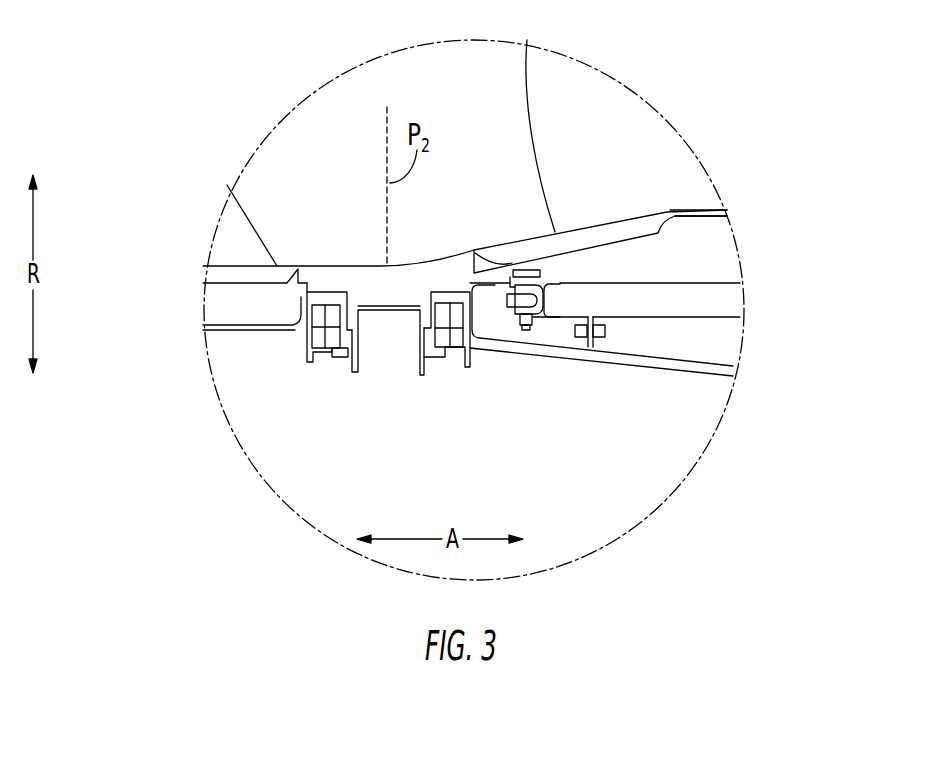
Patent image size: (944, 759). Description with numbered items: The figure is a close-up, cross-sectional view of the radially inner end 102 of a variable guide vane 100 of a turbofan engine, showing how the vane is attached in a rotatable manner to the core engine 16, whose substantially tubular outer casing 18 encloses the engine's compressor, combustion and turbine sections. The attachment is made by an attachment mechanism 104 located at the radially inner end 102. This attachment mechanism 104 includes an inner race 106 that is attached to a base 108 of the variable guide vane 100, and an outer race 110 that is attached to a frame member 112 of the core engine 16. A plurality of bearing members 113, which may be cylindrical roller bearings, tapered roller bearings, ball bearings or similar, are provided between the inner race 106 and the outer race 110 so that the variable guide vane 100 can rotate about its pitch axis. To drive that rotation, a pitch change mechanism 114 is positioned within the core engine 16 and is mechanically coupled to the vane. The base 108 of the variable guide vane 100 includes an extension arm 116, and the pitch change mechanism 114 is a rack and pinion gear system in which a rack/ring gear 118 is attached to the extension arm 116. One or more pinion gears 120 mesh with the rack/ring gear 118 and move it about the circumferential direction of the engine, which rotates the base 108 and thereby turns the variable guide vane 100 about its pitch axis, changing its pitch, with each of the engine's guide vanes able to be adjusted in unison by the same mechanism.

The core engine 16 is at (688, 200).
The outer casing 18 is at (710, 210).
The variable guide vane 100 is at (262, 168).
The radially inner end 102 is at (477, 224).
The attachment mechanism 104 is at (458, 378).
The inner race 106 is at (345, 350).
The base 108 is at (370, 291).
The outer race 110 is at (302, 325).
The frame member 112 is at (228, 330).
The bearing members 113 is at (322, 358).
The pitch change mechanism 114 is at (578, 265).
The extension arm 116 is at (495, 277).
The rack/ring gear 118 is at (515, 277).
The pinion gear 120 is at (532, 278).